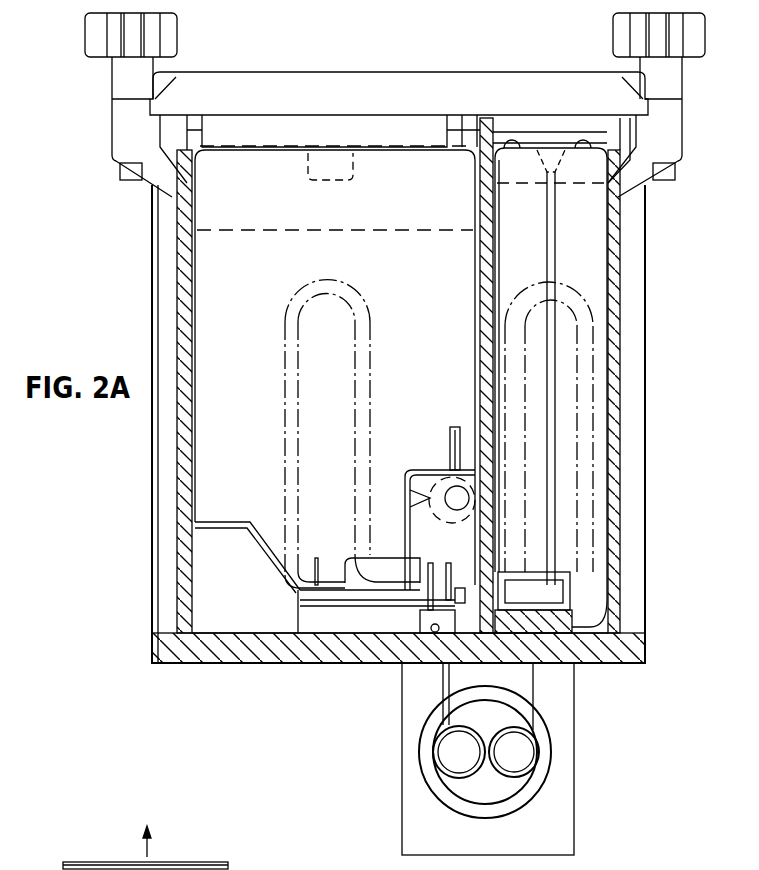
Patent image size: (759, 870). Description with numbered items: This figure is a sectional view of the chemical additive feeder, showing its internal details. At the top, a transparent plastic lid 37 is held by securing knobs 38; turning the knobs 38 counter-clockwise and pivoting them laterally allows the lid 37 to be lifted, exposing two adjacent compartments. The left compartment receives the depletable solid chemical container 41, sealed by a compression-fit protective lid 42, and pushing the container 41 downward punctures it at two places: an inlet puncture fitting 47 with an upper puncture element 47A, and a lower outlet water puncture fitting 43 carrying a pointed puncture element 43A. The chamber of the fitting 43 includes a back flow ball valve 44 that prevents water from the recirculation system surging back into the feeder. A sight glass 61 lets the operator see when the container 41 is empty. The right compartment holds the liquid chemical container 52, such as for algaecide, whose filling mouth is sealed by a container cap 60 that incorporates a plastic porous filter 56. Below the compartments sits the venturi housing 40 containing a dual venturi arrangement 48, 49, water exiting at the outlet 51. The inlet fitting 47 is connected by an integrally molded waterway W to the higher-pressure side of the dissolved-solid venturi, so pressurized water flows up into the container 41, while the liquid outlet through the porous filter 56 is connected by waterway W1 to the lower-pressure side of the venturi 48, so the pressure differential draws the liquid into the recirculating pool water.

The lid 37 is at (288, 70).
The securing knobs 38 is at (178, 32).
The venturi housing 40 is at (574, 830).
The container 41 is at (268, 546).
The protective lid 42 is at (300, 590).
The outlet water puncture fitting 43 is at (417, 628).
The puncture element 43A is at (418, 604).
The back flow ball valve 44 is at (438, 668).
The inlet puncture fitting 47 is at (437, 470).
The puncture element 47A is at (450, 446).
The venturi 48 is at (522, 758).
The venturi 49 is at (452, 757).
The outlet 51 is at (200, 860).
The container 52 is at (592, 252).
The porous filter 56 is at (612, 628).
The container cap 60 is at (565, 596).
The sight glass 61 is at (320, 435).
The waterway W is at (443, 722).
The waterway W1 is at (535, 686).